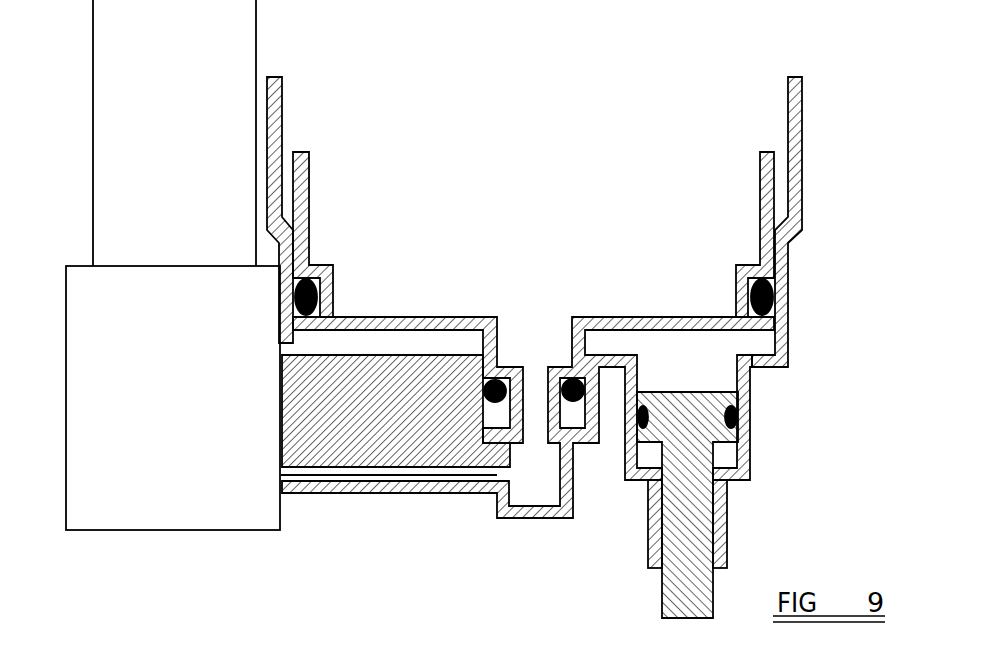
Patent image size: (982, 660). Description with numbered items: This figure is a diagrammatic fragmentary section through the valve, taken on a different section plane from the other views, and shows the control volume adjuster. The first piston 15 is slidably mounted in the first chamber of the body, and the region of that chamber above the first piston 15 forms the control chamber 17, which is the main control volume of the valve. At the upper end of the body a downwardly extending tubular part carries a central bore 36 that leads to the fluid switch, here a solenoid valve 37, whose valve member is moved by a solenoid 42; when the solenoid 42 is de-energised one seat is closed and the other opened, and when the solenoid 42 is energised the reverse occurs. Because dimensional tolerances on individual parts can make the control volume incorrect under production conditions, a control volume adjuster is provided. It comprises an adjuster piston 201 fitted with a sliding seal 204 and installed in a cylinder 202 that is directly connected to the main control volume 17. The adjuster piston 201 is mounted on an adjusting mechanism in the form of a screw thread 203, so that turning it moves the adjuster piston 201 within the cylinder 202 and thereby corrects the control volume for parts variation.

The first piston 15 is at (775, 178).
The control chamber 17 is at (748, 347).
The central bore 36 is at (537, 483).
The solenoid valve 37 is at (245, 500).
The solenoid 42 is at (127, 185).
The adjuster piston 201 is at (708, 438).
The cylinder 202 is at (708, 378).
The screw thread 203 is at (727, 517).
The sliding seal 204 is at (736, 418).